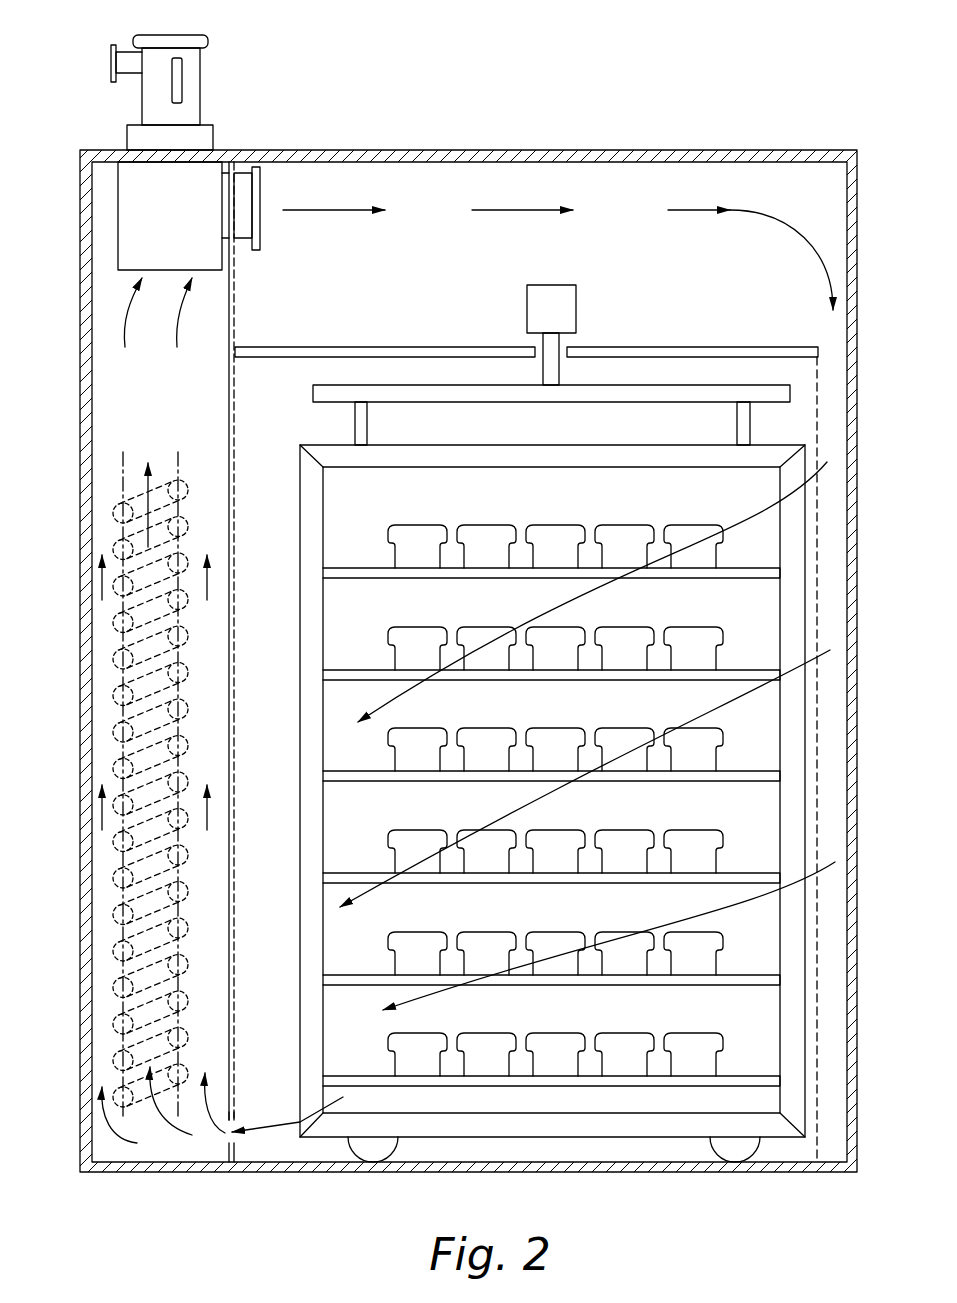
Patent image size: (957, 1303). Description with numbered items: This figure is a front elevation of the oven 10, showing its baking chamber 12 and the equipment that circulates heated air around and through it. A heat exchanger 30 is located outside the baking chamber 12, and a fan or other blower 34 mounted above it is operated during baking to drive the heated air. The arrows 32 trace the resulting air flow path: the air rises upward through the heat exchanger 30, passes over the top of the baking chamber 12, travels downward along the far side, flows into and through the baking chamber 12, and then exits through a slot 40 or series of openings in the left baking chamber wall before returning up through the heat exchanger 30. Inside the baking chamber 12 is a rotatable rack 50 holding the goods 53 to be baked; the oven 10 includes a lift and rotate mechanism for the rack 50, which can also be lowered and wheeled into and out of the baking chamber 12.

The oven 10 is at (700, 108).
The baking chamber 12 is at (543, 717).
The heat exchanger 30 is at (112, 748).
The arrows 32 is at (322, 211).
The blower 34 is at (200, 82).
The slot 40 is at (237, 1118).
The rotatable rack 50 is at (427, 385).
The goods 53 is at (625, 640).